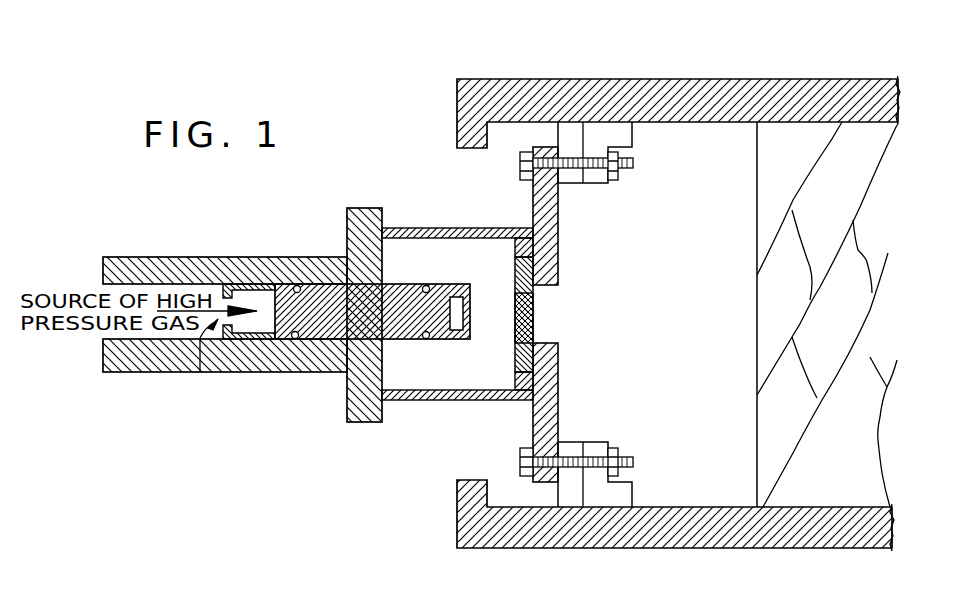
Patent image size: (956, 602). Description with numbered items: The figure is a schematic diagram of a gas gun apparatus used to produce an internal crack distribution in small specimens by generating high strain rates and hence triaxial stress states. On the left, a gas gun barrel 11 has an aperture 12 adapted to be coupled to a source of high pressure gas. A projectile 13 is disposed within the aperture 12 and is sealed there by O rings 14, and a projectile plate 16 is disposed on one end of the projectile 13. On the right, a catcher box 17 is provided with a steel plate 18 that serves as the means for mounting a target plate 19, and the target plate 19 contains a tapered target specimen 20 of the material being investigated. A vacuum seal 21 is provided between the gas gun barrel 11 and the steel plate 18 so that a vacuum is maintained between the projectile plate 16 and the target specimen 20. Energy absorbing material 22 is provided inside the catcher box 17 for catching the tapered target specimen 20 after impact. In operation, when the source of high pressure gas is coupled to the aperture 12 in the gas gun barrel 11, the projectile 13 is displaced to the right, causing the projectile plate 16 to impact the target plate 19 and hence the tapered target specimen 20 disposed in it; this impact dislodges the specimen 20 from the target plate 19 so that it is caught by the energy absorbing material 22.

The gas gun barrel 11 is at (152, 360).
The aperture 12 is at (187, 360).
The projectile 13 is at (323, 335).
The O rings 14 is at (297, 284).
The projectile plate 16 is at (470, 333).
The catcher box 17 is at (628, 83).
The steel plate 18 is at (553, 217).
The target plate 19 is at (513, 265).
The tapered target specimen 20 is at (533, 320).
The vacuum seal 21 is at (410, 229).
The energy absorbing material 22 is at (838, 270).